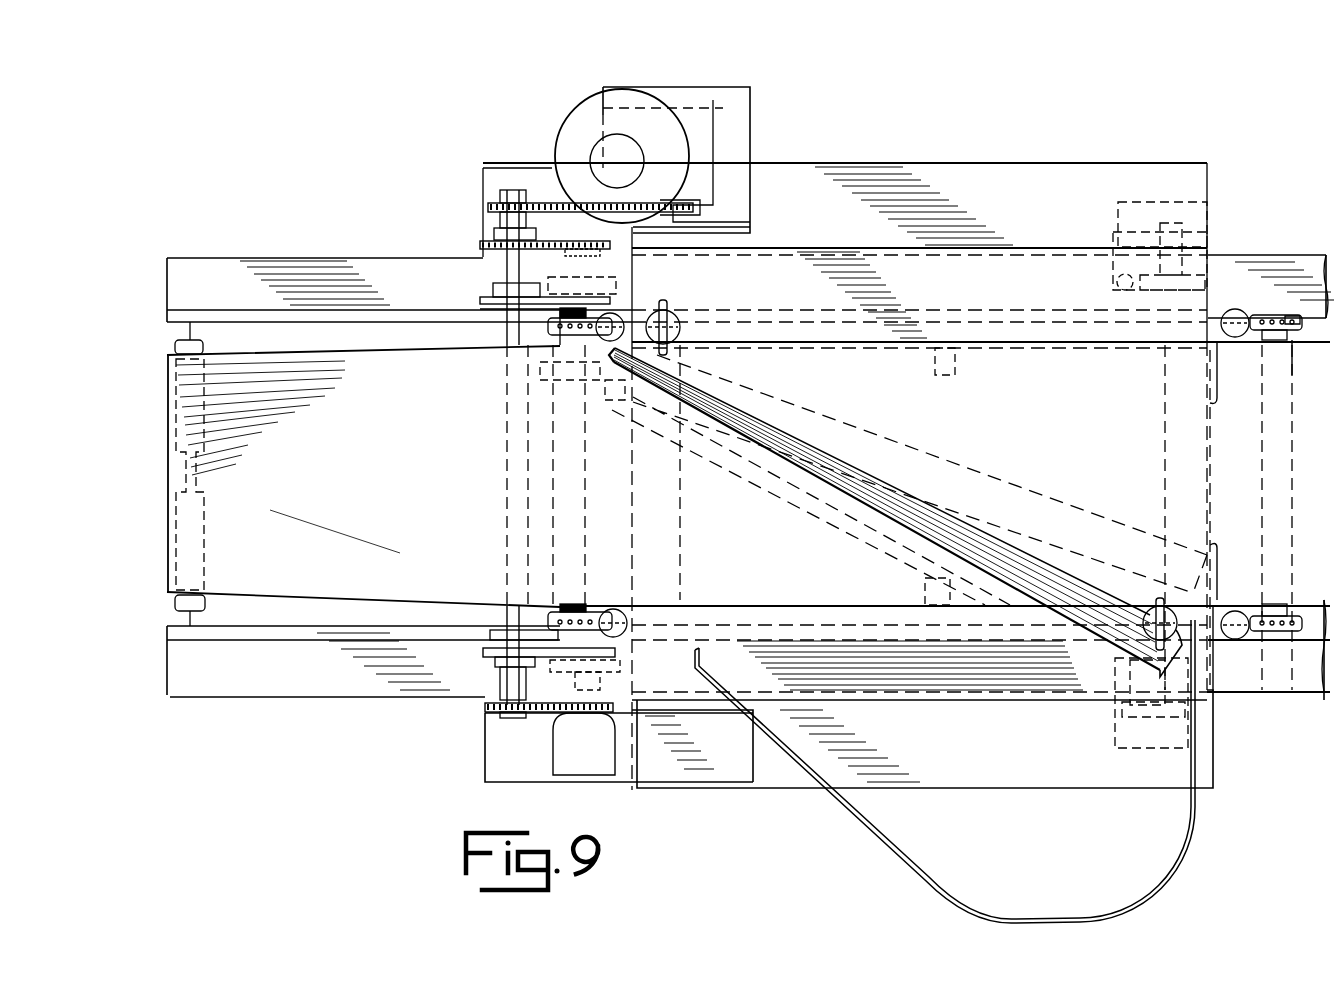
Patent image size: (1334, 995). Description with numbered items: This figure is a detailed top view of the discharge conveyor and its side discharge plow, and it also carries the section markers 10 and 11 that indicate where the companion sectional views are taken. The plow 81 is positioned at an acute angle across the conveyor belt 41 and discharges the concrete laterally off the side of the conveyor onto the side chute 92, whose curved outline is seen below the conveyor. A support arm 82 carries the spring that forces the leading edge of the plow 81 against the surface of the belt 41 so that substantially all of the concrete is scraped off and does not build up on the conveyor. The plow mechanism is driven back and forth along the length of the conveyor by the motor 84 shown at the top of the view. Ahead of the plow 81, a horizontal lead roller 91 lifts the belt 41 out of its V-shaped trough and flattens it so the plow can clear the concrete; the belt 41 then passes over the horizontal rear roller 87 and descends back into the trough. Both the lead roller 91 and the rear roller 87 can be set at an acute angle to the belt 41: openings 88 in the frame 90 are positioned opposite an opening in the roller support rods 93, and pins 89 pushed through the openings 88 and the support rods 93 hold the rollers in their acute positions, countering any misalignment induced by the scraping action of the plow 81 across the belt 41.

The belt 41 is at (1305, 690).
The plow 81 is at (882, 470).
The support arm 82 is at (668, 312).
The motor 84 is at (665, 135).
The rear roller 87 is at (1288, 340).
The openings 88 is at (1268, 318).
The pins 89 is at (1278, 318).
The frame 90 is at (1218, 330).
The lead roller 91 is at (492, 326).
The side chute 92 is at (1175, 863).
The support rods 93 is at (1288, 316).
The section line 10 is at (153, 95).
The section line 11 is at (1040, 522).